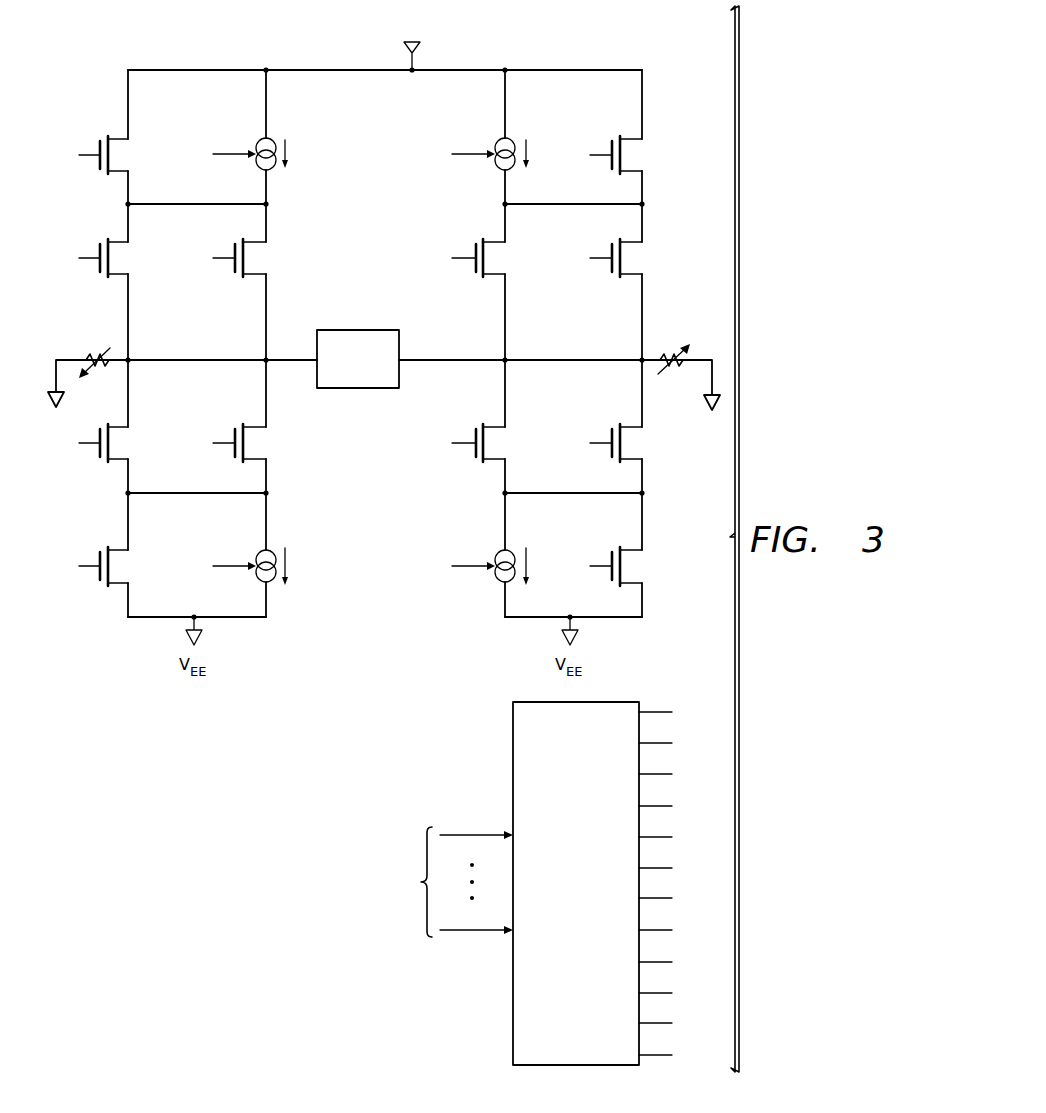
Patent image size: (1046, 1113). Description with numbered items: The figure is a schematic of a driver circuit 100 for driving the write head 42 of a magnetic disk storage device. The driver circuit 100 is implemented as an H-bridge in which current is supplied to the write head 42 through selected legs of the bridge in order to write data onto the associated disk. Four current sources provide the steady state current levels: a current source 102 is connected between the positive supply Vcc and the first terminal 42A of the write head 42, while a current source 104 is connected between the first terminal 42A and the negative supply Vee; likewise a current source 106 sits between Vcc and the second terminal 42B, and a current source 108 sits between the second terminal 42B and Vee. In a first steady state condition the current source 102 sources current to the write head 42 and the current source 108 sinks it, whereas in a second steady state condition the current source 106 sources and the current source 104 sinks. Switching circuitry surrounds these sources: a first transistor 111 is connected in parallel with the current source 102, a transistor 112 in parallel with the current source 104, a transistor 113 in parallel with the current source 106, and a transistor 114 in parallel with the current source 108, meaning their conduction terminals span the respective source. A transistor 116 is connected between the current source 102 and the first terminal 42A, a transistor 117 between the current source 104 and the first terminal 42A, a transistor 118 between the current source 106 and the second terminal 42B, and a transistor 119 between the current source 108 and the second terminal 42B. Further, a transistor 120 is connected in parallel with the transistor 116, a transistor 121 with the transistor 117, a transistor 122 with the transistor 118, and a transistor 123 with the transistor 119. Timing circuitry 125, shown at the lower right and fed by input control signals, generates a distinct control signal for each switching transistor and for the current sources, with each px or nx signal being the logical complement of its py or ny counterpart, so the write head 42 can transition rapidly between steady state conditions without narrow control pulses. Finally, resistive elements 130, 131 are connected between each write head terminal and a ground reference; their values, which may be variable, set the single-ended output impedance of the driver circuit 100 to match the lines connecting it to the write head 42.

The driver circuit 100 is at (629, 56).
The current source 102 is at (256, 162).
The current source 104 is at (273, 551).
The current source 106 is at (494, 162).
The current source 108 is at (497, 580).
The first transistor 111 is at (102, 136).
The transistor 112 is at (100, 587).
The transistor 113 is at (613, 136).
The transistor 114 is at (612, 550).
The transistor 116 is at (236, 274).
The transistor 117 is at (235, 426).
The transistor 118 is at (476, 274).
The transistor 119 is at (476, 463).
The transistor 120 is at (102, 240).
The transistor 121 is at (100, 463).
The transistor 122 is at (612, 274).
The transistor 123 is at (612, 426).
The timing circuitry 125 is at (513, 765).
The resistive element 130 is at (91, 352).
The resistive element 131 is at (668, 352).
The write head 42 is at (356, 328).
The first terminal 42A is at (295, 357).
The second terminal 42B is at (440, 365).